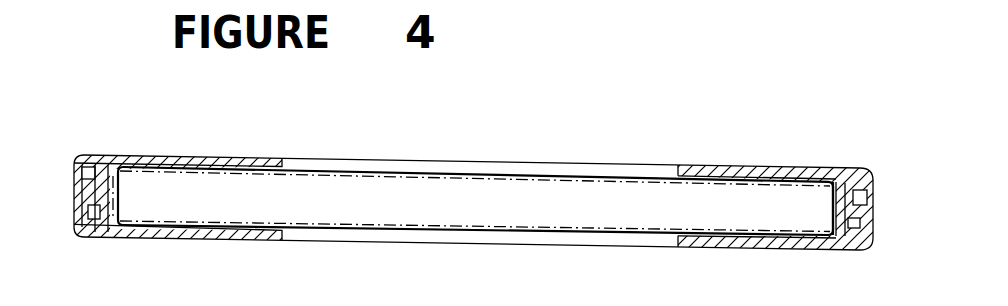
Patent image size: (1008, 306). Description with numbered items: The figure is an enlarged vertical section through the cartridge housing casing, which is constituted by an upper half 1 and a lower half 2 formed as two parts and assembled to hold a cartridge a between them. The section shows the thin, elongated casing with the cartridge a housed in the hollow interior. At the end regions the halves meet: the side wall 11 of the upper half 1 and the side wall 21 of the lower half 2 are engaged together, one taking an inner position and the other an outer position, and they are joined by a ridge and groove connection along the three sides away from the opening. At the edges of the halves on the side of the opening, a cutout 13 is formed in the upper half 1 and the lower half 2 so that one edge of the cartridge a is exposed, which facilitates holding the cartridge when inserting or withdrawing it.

The upper half 1 is at (768, 165).
The lower half 2 is at (725, 250).
The side wall of upper half 11 is at (832, 216).
The cutout 13 is at (604, 171).
The side wall of lower half 21 is at (873, 218).
The cartridge a is at (100, 240).